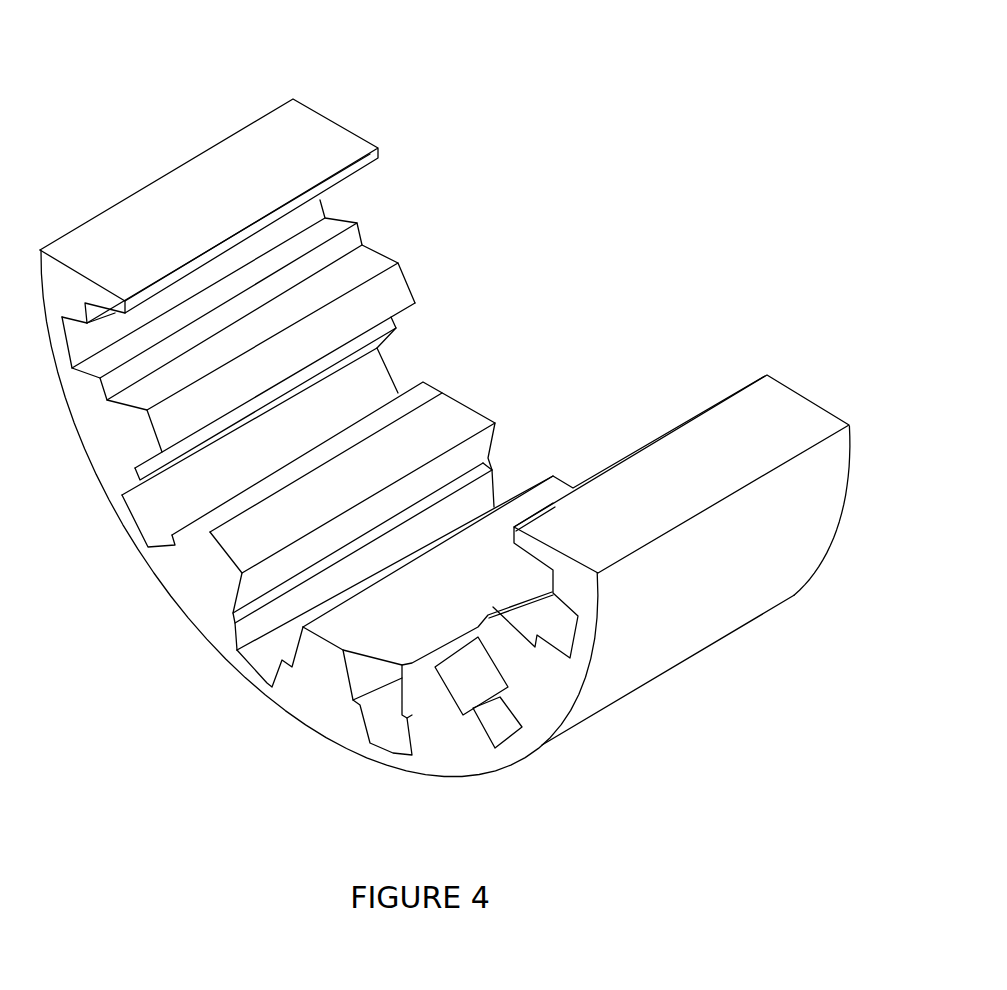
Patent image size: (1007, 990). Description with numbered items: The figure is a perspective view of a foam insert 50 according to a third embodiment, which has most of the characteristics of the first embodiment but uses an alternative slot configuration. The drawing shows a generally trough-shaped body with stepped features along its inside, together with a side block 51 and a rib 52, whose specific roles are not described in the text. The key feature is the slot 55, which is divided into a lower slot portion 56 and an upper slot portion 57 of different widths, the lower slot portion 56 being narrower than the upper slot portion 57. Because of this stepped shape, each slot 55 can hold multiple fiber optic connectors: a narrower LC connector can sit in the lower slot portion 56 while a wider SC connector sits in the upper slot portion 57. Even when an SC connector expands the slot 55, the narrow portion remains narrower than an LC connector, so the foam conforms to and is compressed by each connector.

The foam insert 50 is at (483, 231).
The side block 51 is at (680, 603).
The rib 52 is at (460, 423).
The slot 55 is at (506, 478).
The lower slot portion 56 is at (268, 665).
The upper slot portion 57 is at (253, 585).